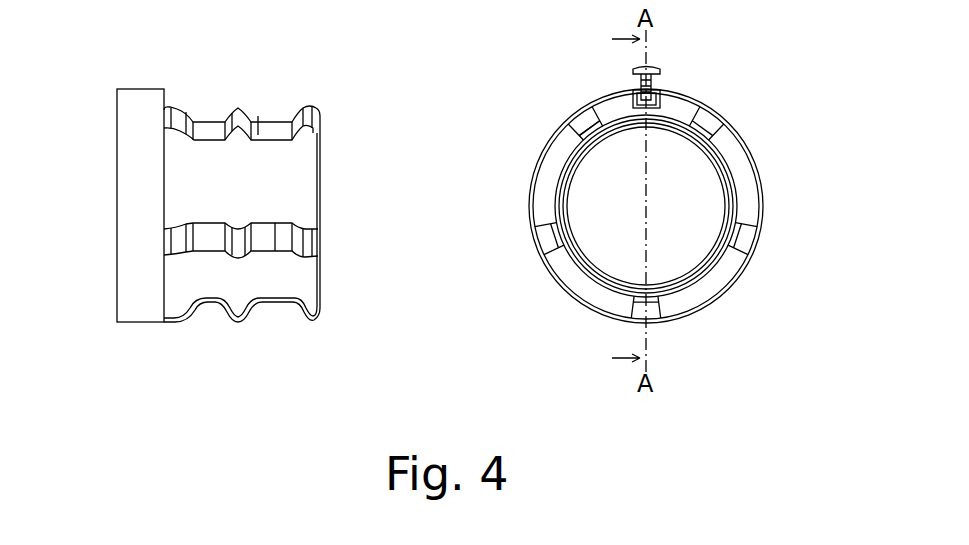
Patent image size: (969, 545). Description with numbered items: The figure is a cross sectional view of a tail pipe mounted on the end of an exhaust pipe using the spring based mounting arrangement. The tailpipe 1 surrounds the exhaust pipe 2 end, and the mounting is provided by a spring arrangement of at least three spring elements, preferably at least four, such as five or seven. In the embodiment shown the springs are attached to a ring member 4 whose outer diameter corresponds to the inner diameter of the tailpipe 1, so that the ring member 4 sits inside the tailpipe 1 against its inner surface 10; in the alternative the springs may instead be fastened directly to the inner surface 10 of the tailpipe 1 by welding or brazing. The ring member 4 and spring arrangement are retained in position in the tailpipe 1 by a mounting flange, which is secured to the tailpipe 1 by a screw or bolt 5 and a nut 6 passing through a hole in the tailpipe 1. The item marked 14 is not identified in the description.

The tailpipe 1 is at (760, 175).
The exhaust pipe 2 is at (705, 278).
The ring member 4 is at (153, 188).
The screw or bolt 5 is at (652, 68).
The nut 6 is at (660, 100).
The inner surface 10 is at (731, 262).
The gap 14 is at (582, 278).